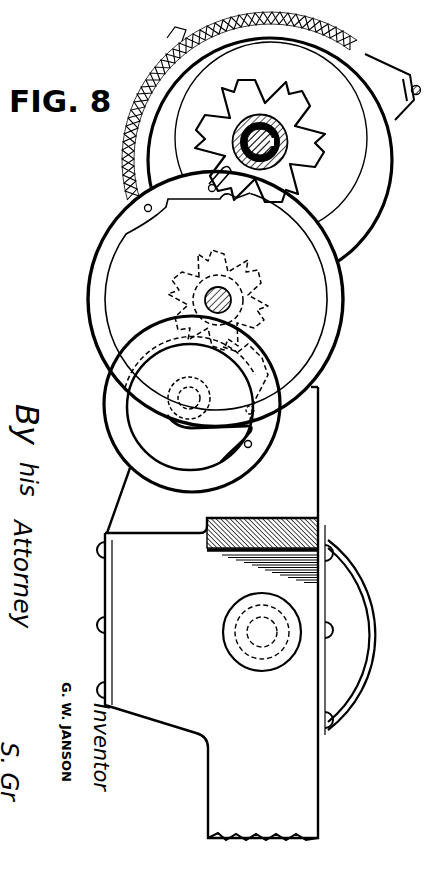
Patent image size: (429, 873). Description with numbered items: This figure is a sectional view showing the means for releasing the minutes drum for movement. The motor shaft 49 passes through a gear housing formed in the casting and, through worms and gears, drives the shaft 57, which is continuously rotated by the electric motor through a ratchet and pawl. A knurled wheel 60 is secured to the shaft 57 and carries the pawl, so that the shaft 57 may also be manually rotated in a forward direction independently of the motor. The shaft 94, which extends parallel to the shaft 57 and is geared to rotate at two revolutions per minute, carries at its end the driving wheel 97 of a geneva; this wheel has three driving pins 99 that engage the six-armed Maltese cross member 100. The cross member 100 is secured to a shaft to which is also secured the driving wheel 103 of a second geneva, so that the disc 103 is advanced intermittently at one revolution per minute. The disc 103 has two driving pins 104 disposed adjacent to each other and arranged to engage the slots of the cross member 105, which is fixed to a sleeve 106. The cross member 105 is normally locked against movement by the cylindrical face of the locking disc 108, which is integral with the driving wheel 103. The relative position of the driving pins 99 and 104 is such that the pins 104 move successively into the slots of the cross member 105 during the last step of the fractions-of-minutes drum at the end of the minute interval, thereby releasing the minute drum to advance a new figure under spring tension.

The motor shaft 49 is at (262, 634).
The shaft 57 is at (269, 118).
The knurled wheel 60 is at (349, 61).
The shaft 94 is at (185, 418).
The driving wheel 97 is at (112, 426).
The driving pins 99 is at (252, 446).
The six-armed Maltese cross member 100 is at (255, 300).
The driving wheel 103 is at (104, 326).
The driving pins 104 is at (144, 208).
The Maltese cross member 105 is at (300, 176).
The sleeve 106 is at (255, 118).
The locking disc 108 is at (118, 272).